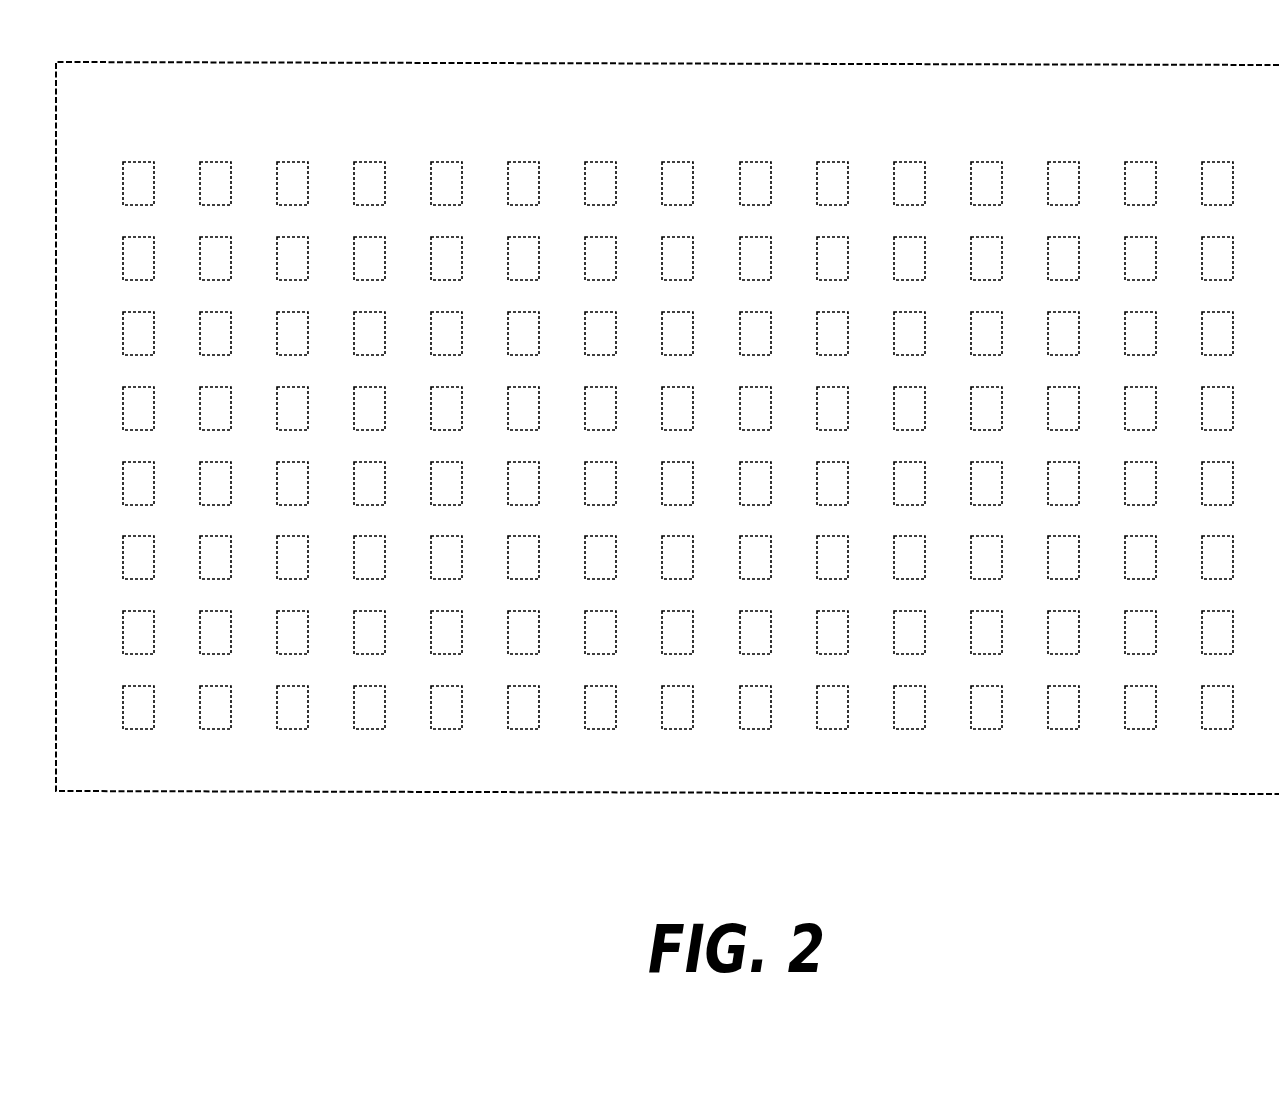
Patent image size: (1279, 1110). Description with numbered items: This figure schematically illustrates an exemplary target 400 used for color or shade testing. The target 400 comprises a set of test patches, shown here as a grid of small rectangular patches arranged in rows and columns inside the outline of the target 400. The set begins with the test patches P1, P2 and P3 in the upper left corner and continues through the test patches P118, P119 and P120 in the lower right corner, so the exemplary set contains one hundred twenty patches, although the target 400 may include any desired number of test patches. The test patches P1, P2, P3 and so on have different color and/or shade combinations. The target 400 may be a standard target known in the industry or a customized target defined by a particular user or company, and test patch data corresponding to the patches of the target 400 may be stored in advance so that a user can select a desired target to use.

The target 400 is at (295, 792).
The test patch P1 is at (137, 160).
The test patch P2 is at (213, 162).
The test patch P3 is at (297, 162).
The test patch P118 is at (1065, 731).
The test patch P119 is at (1143, 731).
The test patch P120 is at (1220, 731).